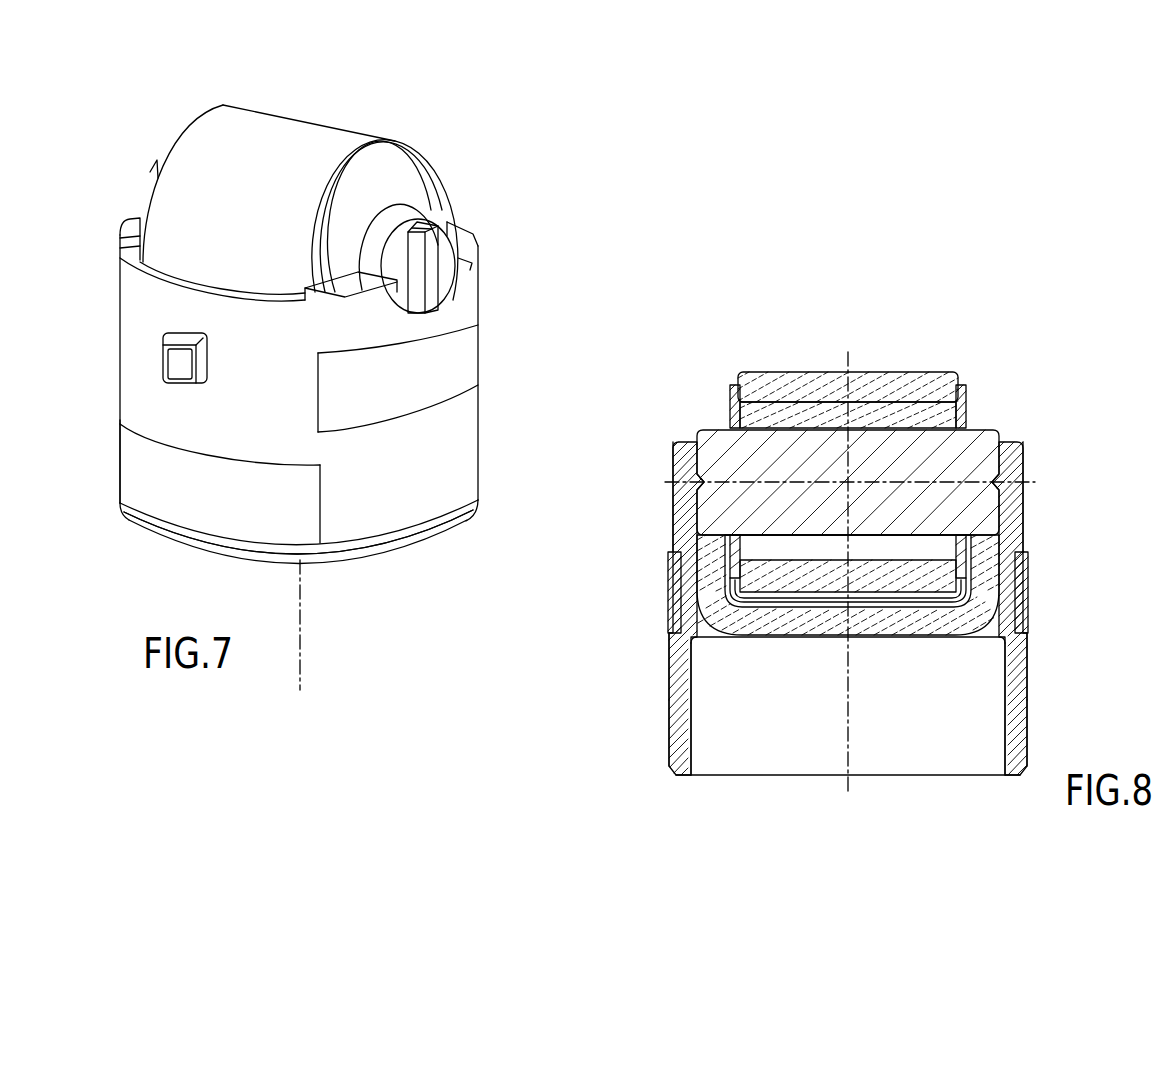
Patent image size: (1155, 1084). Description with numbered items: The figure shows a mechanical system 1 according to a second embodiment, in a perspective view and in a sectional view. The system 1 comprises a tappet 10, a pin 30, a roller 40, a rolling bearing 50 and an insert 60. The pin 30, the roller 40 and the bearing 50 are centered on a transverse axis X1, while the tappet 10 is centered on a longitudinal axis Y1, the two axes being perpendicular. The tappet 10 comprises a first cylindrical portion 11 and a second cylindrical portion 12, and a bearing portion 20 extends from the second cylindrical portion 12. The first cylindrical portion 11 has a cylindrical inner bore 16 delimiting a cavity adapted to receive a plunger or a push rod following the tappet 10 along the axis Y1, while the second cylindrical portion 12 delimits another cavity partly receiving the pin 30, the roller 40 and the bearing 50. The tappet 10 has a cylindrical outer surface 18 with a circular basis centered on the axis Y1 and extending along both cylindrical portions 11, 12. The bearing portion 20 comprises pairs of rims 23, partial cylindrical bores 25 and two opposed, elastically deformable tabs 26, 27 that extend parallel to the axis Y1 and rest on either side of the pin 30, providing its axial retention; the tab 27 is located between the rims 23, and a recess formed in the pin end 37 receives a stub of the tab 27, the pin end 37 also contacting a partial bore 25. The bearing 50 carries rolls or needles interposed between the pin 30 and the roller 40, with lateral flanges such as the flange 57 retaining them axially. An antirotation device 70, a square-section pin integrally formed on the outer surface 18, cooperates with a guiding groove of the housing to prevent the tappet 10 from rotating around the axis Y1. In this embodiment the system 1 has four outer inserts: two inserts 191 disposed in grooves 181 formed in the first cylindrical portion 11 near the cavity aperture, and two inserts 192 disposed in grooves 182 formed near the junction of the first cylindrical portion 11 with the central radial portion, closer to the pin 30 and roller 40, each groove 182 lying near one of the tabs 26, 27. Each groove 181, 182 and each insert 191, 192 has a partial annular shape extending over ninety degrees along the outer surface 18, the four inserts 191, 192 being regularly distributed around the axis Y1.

In FIG. 7, the mechanical system 1 is at (508, 164).
In FIG. 7, the tappet 10 is at (448, 556).
In FIG. 8, the tappet 10 is at (648, 779).
In FIG. 8, the first cylindrical portion 11 is at (1018, 737).
In FIG. 7, the second cylindrical portion 12 is at (127, 280).
In FIG. 8, the second cylindrical portion 12 is at (1023, 545).
In FIG. 8, the cylindrical inner bore 16 is at (1003, 711).
In FIG. 7, the cylindrical outer surface 18 is at (456, 316).
In FIG. 8, the cylindrical outer surface 18 is at (1040, 675).
In FIG. 8, the bearing portion 20 is at (1036, 422).
In FIG. 7, the rims 23 is at (462, 245).
In FIG. 7, the partial cylindrical bore 25 is at (462, 263).
In FIG. 7, the tab 26 is at (157, 168).
In FIG. 7, the tab 27 is at (433, 275).
In FIG. 7, the pin 30 is at (390, 213).
In FIG. 8, the pin 30 is at (783, 448).
In FIG. 7, the pin end 37 is at (418, 212).
In FIG. 7, the roller 40 is at (298, 136).
In FIG. 8, the roller 40 is at (837, 383).
In FIG. 8, the rolling bearing 50 is at (897, 412).
In FIG. 7, the lateral flange 57 is at (382, 183).
In FIG. 8, the insert 60 is at (782, 622).
In FIG. 7, the antirotation device 70 is at (180, 360).
In FIG. 7, the groove 181 is at (136, 443).
In FIG. 7, the groove 182 is at (447, 340).
In FIG. 8, the groove 182 is at (1035, 580).
In FIG. 7, the insert 191 is at (152, 493).
In FIG. 7, the insert 192 is at (433, 392).
In FIG. 8, the insert 192 is at (1023, 602).
In FIG. 8, the transverse axis X1 is at (861, 482).
In FIG. 7, the longitudinal axis Y1 is at (299, 640).
In FIG. 8, the longitudinal axis Y1 is at (851, 586).